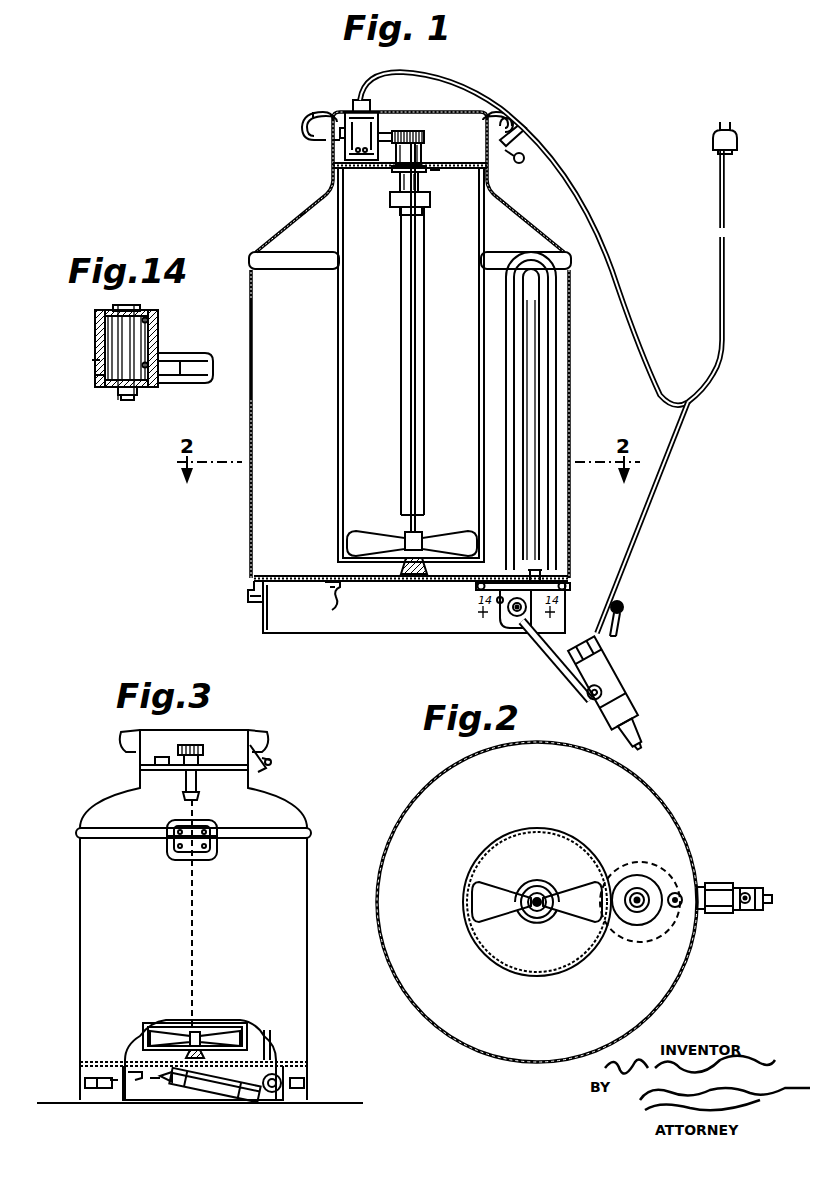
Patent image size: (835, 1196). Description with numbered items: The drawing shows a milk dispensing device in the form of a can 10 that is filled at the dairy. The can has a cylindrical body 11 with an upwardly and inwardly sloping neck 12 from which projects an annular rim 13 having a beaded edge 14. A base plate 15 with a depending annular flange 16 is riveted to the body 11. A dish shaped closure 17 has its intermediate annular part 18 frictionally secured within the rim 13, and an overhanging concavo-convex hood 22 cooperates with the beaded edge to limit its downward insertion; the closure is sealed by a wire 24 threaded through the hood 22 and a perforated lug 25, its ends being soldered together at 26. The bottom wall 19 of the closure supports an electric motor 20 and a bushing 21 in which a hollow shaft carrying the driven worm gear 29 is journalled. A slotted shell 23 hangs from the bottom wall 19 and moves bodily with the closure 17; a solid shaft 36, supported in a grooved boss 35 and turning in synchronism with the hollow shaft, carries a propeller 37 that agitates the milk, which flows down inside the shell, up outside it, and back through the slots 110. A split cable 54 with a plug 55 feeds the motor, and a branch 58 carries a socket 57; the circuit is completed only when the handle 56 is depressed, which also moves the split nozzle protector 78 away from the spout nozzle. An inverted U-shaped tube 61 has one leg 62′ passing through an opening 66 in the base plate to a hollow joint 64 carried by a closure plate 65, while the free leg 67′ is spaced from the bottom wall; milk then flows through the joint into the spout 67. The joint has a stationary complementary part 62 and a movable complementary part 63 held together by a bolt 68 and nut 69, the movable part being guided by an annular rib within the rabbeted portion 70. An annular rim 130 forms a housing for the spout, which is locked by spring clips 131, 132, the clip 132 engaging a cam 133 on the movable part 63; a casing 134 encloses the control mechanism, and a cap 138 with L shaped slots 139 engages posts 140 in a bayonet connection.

In FIG. 1, the can 10 is at (249, 292).
In FIG. 1, the cylindrical body 11 is at (571, 374).
In FIG. 3, the cylindrical body 11 is at (302, 920).
In FIG. 2, the cylindrical body 11 is at (666, 808).
In FIG. 1, the neck 12 is at (302, 196).
In FIG. 1, the annular rim 13 is at (332, 142).
In FIG. 1, the beaded edge 14 is at (301, 128).
In FIG. 1, the base plate 15 is at (280, 575).
In FIG. 1, the depending annular flange 16 is at (247, 584).
In FIG. 1, the dish shaped closure 17 is at (442, 162).
In FIG. 1, the intermediate annular part 18 is at (491, 108).
In FIG. 1, the bottom wall 19 is at (444, 170).
In FIG. 1, the electric motor 20 is at (350, 100).
In FIG. 1, the bushing 21 is at (420, 160).
In FIG. 1, the hood 22 is at (313, 110).
In FIG. 1, the slotted shell 23 is at (350, 346).
In FIG. 3, the slotted shell 23 is at (246, 1030).
In FIG. 2, the slotted shell 23 is at (489, 846).
In FIG. 1, the wire 24 is at (525, 128).
In FIG. 1, the perforated lug 25 is at (508, 162).
In FIG. 1, the soldered joint 26 is at (520, 146).
In FIG. 3, the soldered joint 26 is at (272, 762).
In FIG. 1, the driven worm gear 29 is at (410, 131).
In FIG. 3, the driven worm gear 29 is at (191, 744).
In FIG. 1, the grooved boss 35 is at (415, 576).
In FIG. 2, the grooved boss 35 is at (538, 915).
In FIG. 1, the solid shaft 36 is at (408, 388).
In FIG. 3, the solid shaft 36 is at (198, 920).
In FIG. 1, the propeller 37 is at (373, 542).
In FIG. 3, the propeller 37 is at (205, 1033).
In FIG. 2, the propeller 37 is at (487, 915).
In FIG. 1, the split cable 54 is at (724, 270).
In FIG. 1, the plug 55 is at (739, 140).
In FIG. 1, the handle 56 is at (619, 622).
In FIG. 2, the handle 56 is at (746, 893).
In FIG. 1, the socket 57 is at (590, 650).
In FIG. 1, the branch 58 is at (643, 519).
In FIG. 1, the inverted U-shaped tube 61 is at (531, 280).
In FIG. 14, the stationary complementary part 62 is at (96, 320).
In FIG. 1, the leg 62′ is at (521, 416).
In FIG. 14, the movable complementary part 63 is at (96, 378).
In FIG. 1, the hollow joint 64 is at (498, 604).
In FIG. 14, the hollow joint 64 is at (84, 360).
In FIG. 1, the closure plate 65 is at (476, 590).
In FIG. 1, the opening 66 is at (536, 578).
In FIG. 1, the spout 67 is at (548, 652).
In FIG. 14, the spout 67 is at (170, 384).
In FIG. 2, the spout 67 is at (637, 878).
In FIG. 1, the free leg 67′ is at (553, 497).
In FIG. 14, the bolt 68 is at (109, 328).
In FIG. 14, the nut 69 is at (148, 350).
In FIG. 14, the annular rabbeted portion 70 is at (117, 348).
In FIG. 1, the split nozzle protector 78 is at (645, 737).
In FIG. 3, the split nozzle protector 78 is at (165, 1084).
In FIG. 2, the split nozzle protector 78 is at (770, 894).
In FIG. 1, the slots 110 is at (398, 298).
In FIG. 2, the slots 110 is at (540, 830).
In FIG. 1, the annular rim 130 is at (262, 619).
In FIG. 1, the spring bent clip 131 is at (333, 598).
In FIG. 3, the spring bent clip 131 is at (140, 1082).
In FIG. 1, the spring clip 132 is at (514, 618).
In FIG. 3, the spring clip 132 is at (282, 1076).
In FIG. 1, the cam 133 is at (510, 616).
In FIG. 1, the casing 134 is at (622, 680).
In FIG. 3, the casing 134 is at (195, 1090).
In FIG. 2, the casing 134 is at (712, 913).
In FIG. 3, the cap 138 is at (88, 1085).
In FIG. 3, the L shaped slots 139 is at (102, 1089).
In FIG. 3, the post 140 is at (110, 1088).